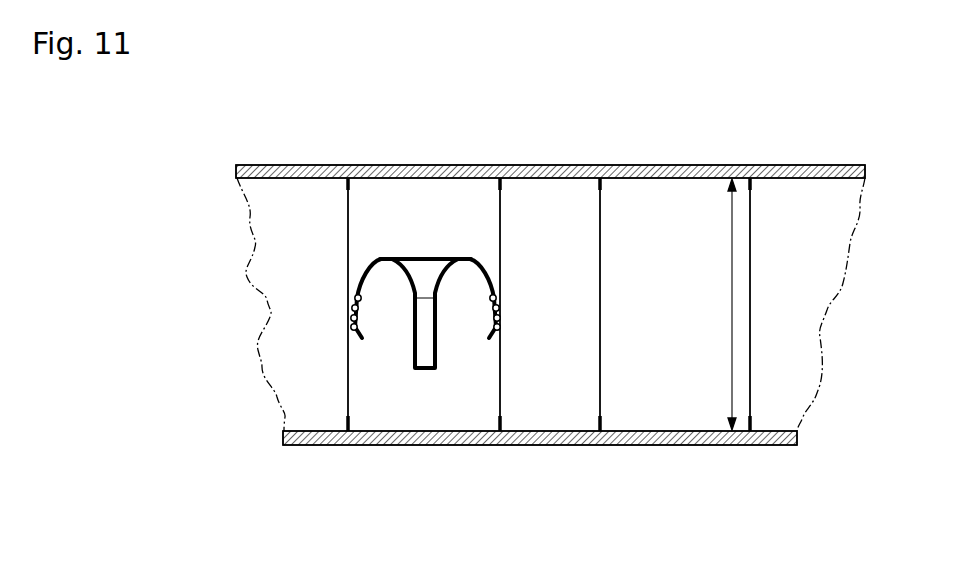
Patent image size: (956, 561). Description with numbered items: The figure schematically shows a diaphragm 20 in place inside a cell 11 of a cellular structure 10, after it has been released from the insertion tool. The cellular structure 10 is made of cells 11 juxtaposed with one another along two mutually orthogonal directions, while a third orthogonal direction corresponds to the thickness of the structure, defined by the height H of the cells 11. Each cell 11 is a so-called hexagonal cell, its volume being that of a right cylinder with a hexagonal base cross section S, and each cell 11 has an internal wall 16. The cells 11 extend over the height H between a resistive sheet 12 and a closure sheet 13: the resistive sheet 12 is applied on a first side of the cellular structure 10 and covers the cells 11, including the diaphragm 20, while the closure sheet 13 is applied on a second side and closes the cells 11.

The cellular structure 10 is at (665, 153).
The cell 11 is at (385, 209).
The resistive sheet 12 is at (557, 165).
The closure sheet 13 is at (425, 447).
The internal wall 16 is at (500, 360).
The diaphragm 20 is at (472, 254).
The height of the cells H is at (725, 304).
The hexagonal base cross section S is at (647, 449).